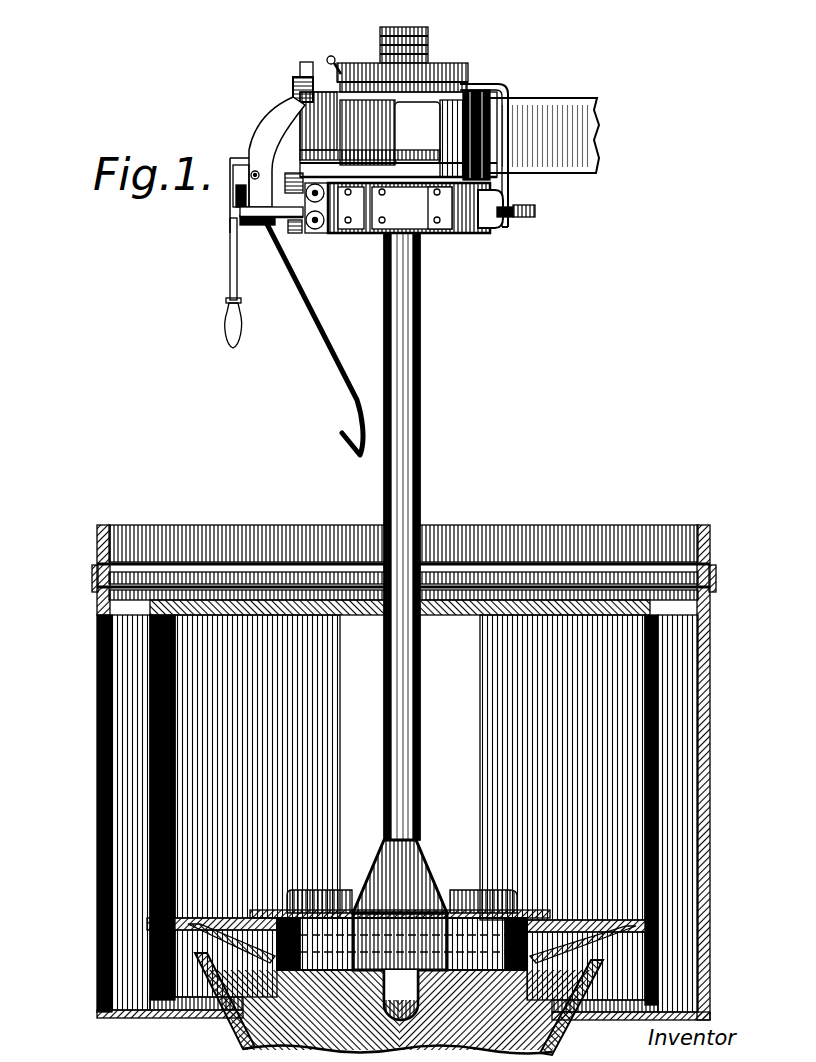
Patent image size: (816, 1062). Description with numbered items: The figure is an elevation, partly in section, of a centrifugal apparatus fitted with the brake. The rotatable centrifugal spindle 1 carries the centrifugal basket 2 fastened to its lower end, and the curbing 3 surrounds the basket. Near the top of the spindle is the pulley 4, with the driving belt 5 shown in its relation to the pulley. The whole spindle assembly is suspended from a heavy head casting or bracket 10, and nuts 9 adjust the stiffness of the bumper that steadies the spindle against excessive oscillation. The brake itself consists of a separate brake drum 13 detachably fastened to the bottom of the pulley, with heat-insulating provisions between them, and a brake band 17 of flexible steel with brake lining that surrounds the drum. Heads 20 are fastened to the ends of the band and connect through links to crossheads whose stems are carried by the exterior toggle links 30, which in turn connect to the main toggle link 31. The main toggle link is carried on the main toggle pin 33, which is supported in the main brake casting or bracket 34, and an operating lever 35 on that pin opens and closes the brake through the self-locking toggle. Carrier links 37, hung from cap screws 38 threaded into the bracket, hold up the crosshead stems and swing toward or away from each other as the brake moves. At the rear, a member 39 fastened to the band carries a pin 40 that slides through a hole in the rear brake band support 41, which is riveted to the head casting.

The rotatable centrifugal spindle 1 is at (422, 433).
The centrifugal basket 2 is at (153, 760).
The curbing 3 is at (97, 712).
The pulley 4 is at (497, 157).
The driving belt 5 is at (527, 100).
The nuts 9 is at (428, 42).
The head casting or bracket 10 is at (440, 72).
The brake drum 13 is at (397, 230).
The brake band 17 is at (403, 217).
The heads 20 is at (350, 236).
The exterior toggle links 30 is at (300, 226).
The main toggle link 31 is at (292, 237).
The main toggle pin 33 is at (238, 208).
The main brake casting or bracket 34 is at (308, 80).
The operating lever 35 is at (230, 260).
The carrier links 37 is at (283, 133).
The cap screws 38 is at (295, 98).
The member 39 is at (492, 230).
The pin 40 is at (535, 213).
The rear brake band support 41 is at (508, 188).